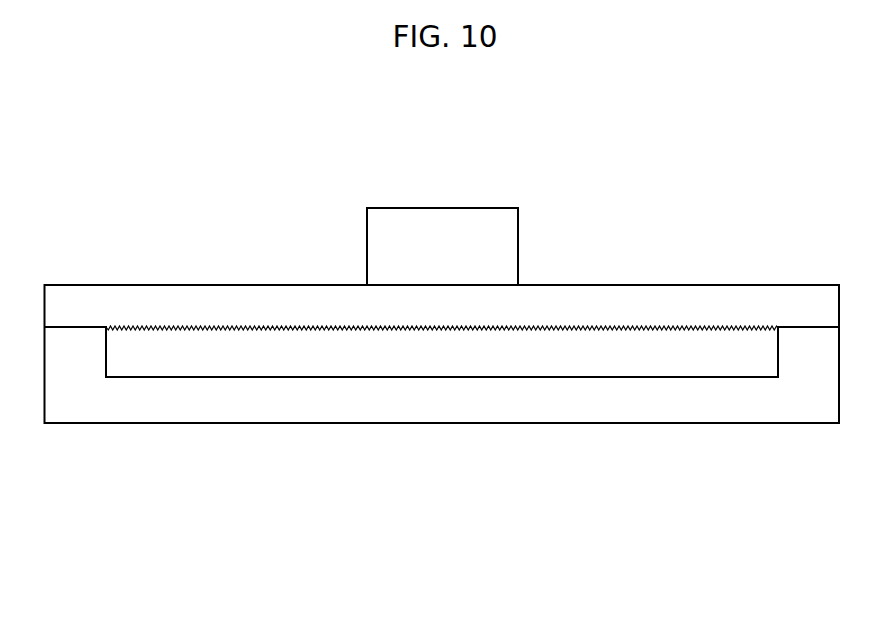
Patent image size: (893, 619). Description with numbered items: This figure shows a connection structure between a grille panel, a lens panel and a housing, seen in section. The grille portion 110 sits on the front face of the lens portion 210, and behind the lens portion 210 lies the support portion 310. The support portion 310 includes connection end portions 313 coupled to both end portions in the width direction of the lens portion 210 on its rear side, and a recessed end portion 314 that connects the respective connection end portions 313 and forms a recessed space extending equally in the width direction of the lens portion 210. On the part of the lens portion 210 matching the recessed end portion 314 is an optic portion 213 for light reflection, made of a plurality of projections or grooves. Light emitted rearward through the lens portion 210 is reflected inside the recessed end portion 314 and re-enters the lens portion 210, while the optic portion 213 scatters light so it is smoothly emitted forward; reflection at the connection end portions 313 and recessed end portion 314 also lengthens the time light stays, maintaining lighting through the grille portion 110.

The grille portion 110 is at (435, 212).
The lens portion 210 is at (235, 293).
The optic portion for light reflection 213 is at (552, 331).
The support portion 310 is at (301, 428).
The connection end portions 313 is at (78, 348).
The recessed end portion 314 is at (723, 405).